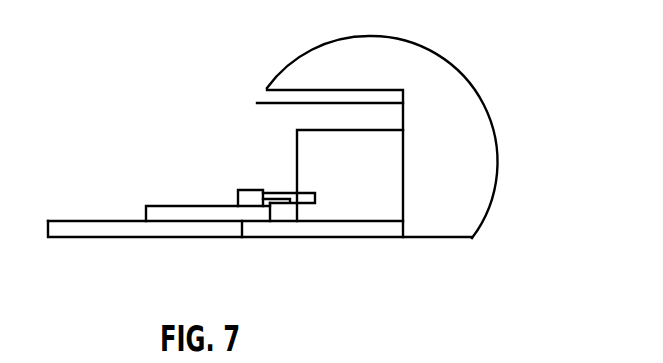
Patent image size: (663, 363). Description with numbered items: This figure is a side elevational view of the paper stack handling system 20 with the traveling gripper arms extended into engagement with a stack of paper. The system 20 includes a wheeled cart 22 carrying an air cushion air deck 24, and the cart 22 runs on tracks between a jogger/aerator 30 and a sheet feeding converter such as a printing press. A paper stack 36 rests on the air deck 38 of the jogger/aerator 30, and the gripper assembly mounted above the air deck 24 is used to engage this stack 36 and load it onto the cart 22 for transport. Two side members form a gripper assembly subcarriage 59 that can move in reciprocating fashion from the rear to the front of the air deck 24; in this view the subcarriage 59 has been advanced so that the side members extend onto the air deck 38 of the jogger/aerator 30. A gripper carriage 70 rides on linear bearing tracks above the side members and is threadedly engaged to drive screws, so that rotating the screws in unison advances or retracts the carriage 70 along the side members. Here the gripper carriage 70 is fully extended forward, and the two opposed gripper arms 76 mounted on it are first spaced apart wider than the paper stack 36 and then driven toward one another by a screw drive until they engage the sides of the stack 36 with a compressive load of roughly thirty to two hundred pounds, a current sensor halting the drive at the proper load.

The system 20 is at (247, 127).
The wheeled cart 22 is at (88, 219).
The air cushion air deck 24 is at (115, 219).
The jogger/aerator 30 is at (482, 72).
The paper stack 36 is at (297, 130).
The air deck of the jogger/aerator 38 is at (353, 220).
The gripper assembly subcarriage 59 is at (186, 205).
The gripper carriage 70 is at (238, 190).
The gripper arms 76 is at (283, 193).